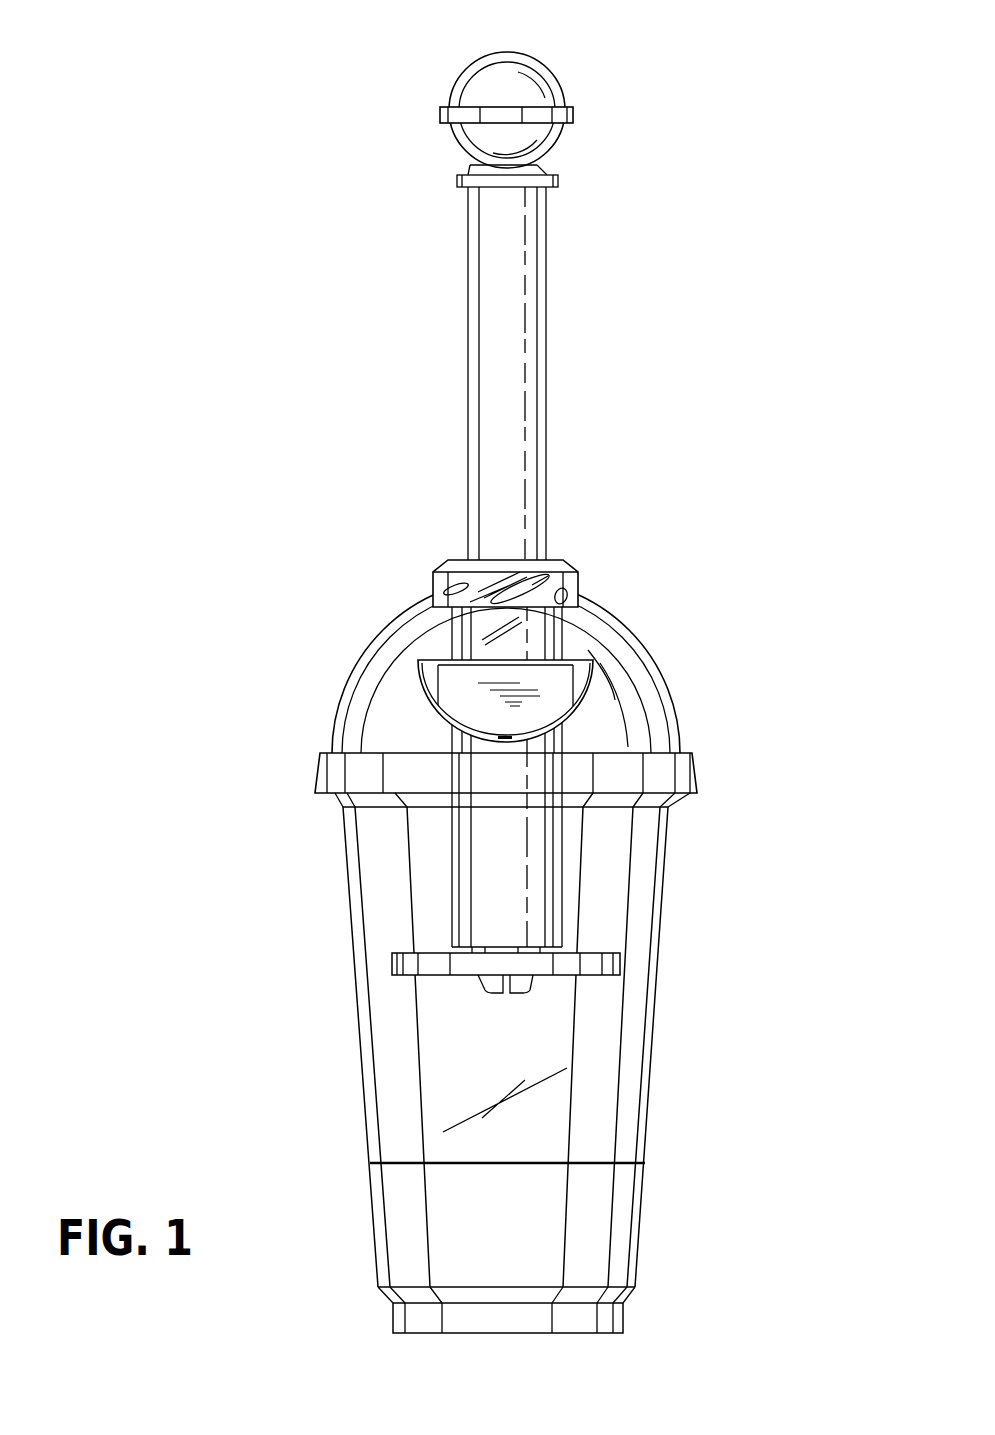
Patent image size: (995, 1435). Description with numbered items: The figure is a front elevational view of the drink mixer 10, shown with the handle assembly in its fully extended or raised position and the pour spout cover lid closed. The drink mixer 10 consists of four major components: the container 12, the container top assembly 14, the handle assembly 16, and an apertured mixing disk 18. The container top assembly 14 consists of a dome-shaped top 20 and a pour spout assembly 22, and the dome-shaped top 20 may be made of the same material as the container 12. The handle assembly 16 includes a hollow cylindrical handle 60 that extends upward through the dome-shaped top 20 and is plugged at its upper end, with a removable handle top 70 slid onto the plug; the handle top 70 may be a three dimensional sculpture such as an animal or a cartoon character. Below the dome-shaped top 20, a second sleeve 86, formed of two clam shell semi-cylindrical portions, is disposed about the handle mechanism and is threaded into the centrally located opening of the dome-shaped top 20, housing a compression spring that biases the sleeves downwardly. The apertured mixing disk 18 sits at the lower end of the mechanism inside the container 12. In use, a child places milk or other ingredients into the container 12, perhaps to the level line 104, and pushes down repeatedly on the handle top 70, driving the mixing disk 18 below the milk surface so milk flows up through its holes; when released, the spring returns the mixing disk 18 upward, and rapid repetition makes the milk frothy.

The drink mixer 10 is at (250, 476).
The container 12 is at (608, 1073).
The container top assembly 14 is at (662, 644).
The handle assembly 16 is at (483, 48).
The apertured mixing disk 18 is at (590, 953).
The dome-shaped top 20 is at (665, 702).
The pour spout assembly 22 is at (431, 653).
The hollow cylindrical handle 60 is at (530, 347).
The handle top 70 is at (522, 85).
The second sleeve 86 is at (483, 868).
The level line 104 is at (585, 1163).